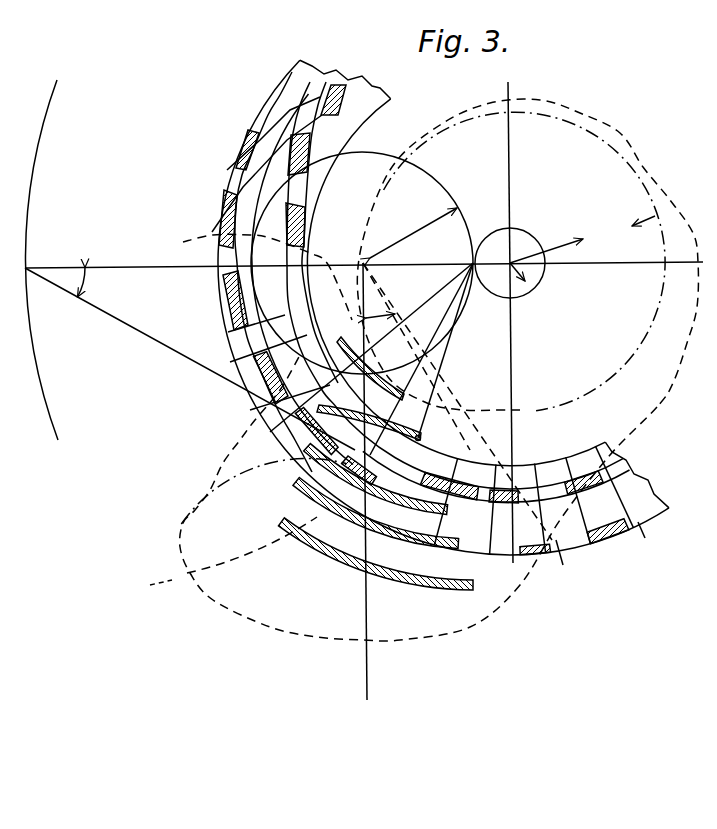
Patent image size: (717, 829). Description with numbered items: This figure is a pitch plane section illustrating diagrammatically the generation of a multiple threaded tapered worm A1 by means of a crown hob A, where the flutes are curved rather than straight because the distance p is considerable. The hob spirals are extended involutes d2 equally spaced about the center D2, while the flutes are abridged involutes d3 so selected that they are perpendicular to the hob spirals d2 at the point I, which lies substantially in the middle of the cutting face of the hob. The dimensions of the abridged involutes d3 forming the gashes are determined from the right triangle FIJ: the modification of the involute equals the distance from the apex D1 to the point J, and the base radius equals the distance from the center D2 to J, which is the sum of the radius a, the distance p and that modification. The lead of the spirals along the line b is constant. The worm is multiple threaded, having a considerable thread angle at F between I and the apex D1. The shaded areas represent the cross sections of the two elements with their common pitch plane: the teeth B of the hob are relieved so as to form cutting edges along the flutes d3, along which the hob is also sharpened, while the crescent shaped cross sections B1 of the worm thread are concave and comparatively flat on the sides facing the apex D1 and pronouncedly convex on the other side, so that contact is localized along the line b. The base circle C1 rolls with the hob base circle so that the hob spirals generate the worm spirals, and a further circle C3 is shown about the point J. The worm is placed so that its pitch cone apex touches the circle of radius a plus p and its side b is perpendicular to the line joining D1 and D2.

The crown hob A is at (300, 72).
The tapered worm A1 is at (418, 513).
The teeth of the hob B is at (234, 291).
The crescent shaped cross sections of the worm thread B1 is at (402, 578).
The base circle C1 is at (428, 184).
The circle C3 is at (50, 430).
The apex D1 is at (360, 262).
The center D2 is at (529, 263).
The point F is at (475, 270).
The point J is at (190, 344).
The point I is at (421, 438).
The line b is at (380, 715).
The distance p is at (406, 233).
The radius a is at (528, 285).
The extended involutes d2 is at (683, 362).
The abridged involutes d3 is at (401, 570).